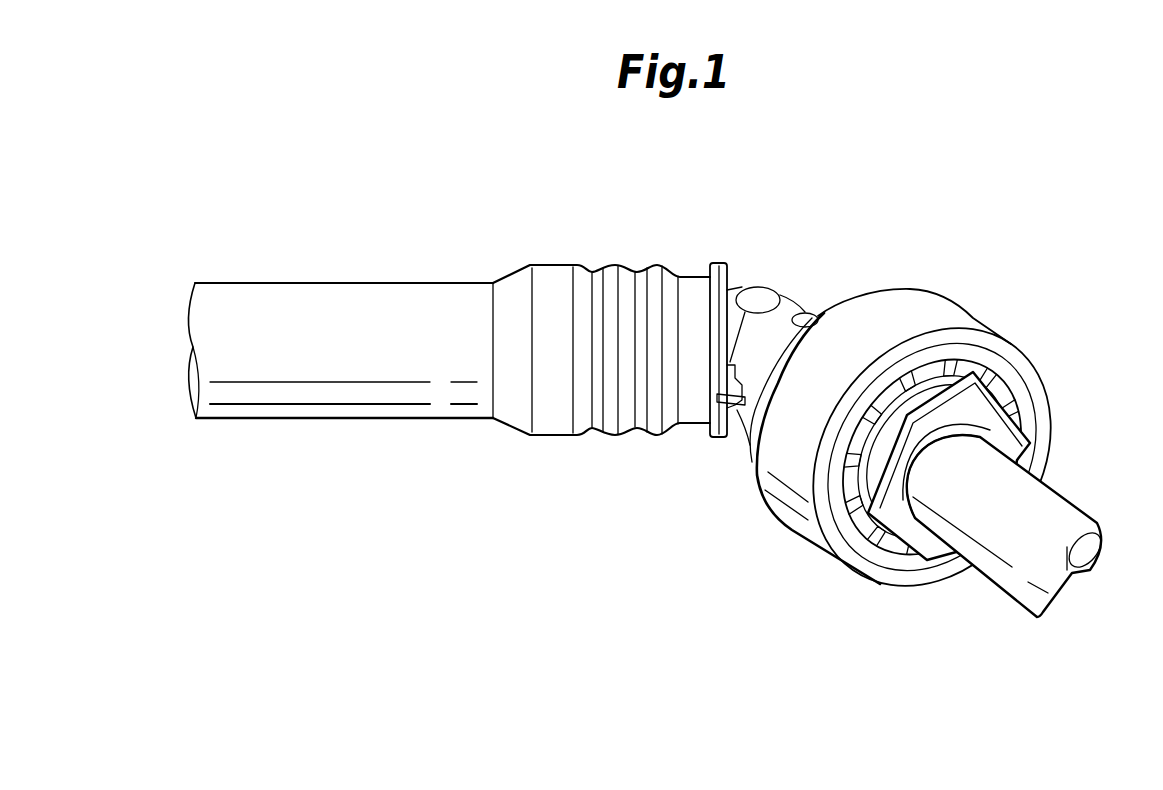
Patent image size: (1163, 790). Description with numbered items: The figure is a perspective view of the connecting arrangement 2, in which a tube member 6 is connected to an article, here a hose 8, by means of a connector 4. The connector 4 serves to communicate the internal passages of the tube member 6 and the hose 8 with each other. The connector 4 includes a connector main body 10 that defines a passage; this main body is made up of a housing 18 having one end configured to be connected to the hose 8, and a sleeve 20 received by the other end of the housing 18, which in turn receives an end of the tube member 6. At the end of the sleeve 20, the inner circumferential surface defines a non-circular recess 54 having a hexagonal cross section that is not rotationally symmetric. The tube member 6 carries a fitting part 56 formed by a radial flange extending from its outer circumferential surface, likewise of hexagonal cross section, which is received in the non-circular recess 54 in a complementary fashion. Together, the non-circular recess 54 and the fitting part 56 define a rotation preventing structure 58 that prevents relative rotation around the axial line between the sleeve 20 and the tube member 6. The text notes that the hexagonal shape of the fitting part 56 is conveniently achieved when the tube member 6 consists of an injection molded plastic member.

The connecting arrangement 2 is at (1041, 259).
The connector 4 is at (1053, 351).
The tube member 6 is at (1062, 507).
The hose 8 is at (312, 292).
The connector main body 10 is at (925, 283).
The housing 18 is at (885, 310).
The sleeve 20 is at (1037, 407).
The non-circular recess 54 is at (893, 545).
The fitting part 56 is at (860, 560).
The rotation preventing structure 58 is at (900, 627).